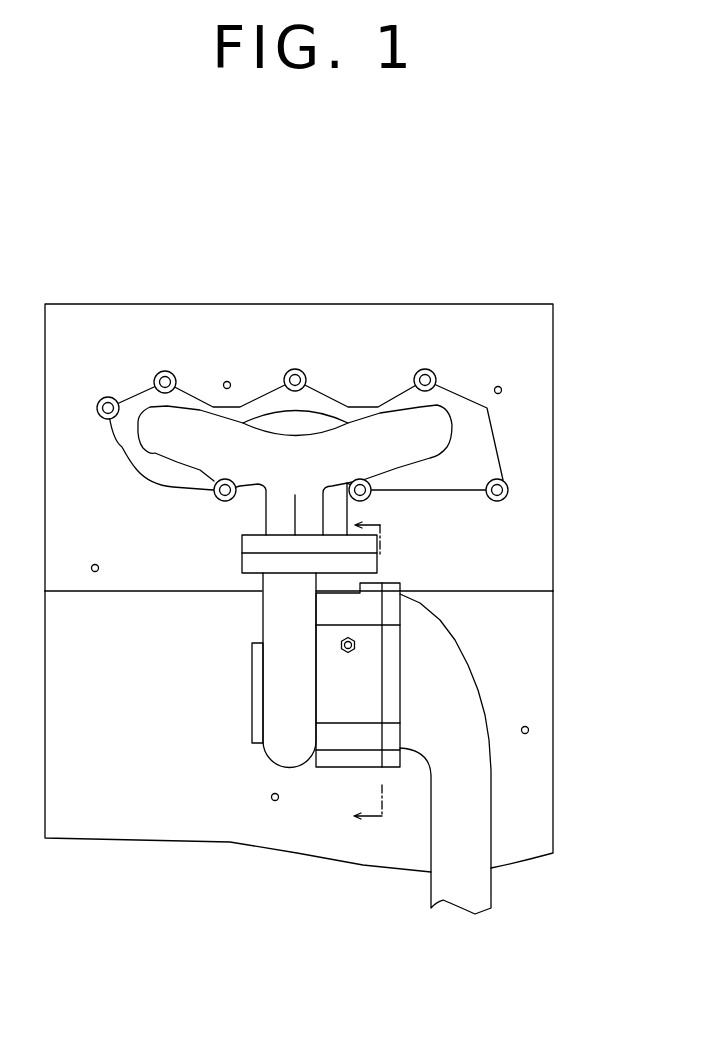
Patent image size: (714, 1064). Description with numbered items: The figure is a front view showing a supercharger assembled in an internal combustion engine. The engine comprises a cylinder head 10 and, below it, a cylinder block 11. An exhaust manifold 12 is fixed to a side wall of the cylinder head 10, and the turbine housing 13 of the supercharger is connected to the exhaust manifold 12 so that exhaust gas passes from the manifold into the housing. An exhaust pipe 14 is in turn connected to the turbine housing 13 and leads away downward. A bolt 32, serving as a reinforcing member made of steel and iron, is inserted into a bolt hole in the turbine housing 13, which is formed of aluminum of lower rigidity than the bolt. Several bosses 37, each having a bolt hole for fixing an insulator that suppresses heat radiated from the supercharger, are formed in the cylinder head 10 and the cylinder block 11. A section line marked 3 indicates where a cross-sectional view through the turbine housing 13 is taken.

The cylinder head 10 is at (543, 435).
The cylinder block 11 is at (543, 693).
The exhaust manifold 12 is at (403, 392).
The turbine housing 13 is at (273, 616).
The exhaust pipe 14 is at (460, 655).
The bolt 32 is at (349, 653).
The bosses 37 is at (228, 381).
The section line III-III 3 is at (360, 665).